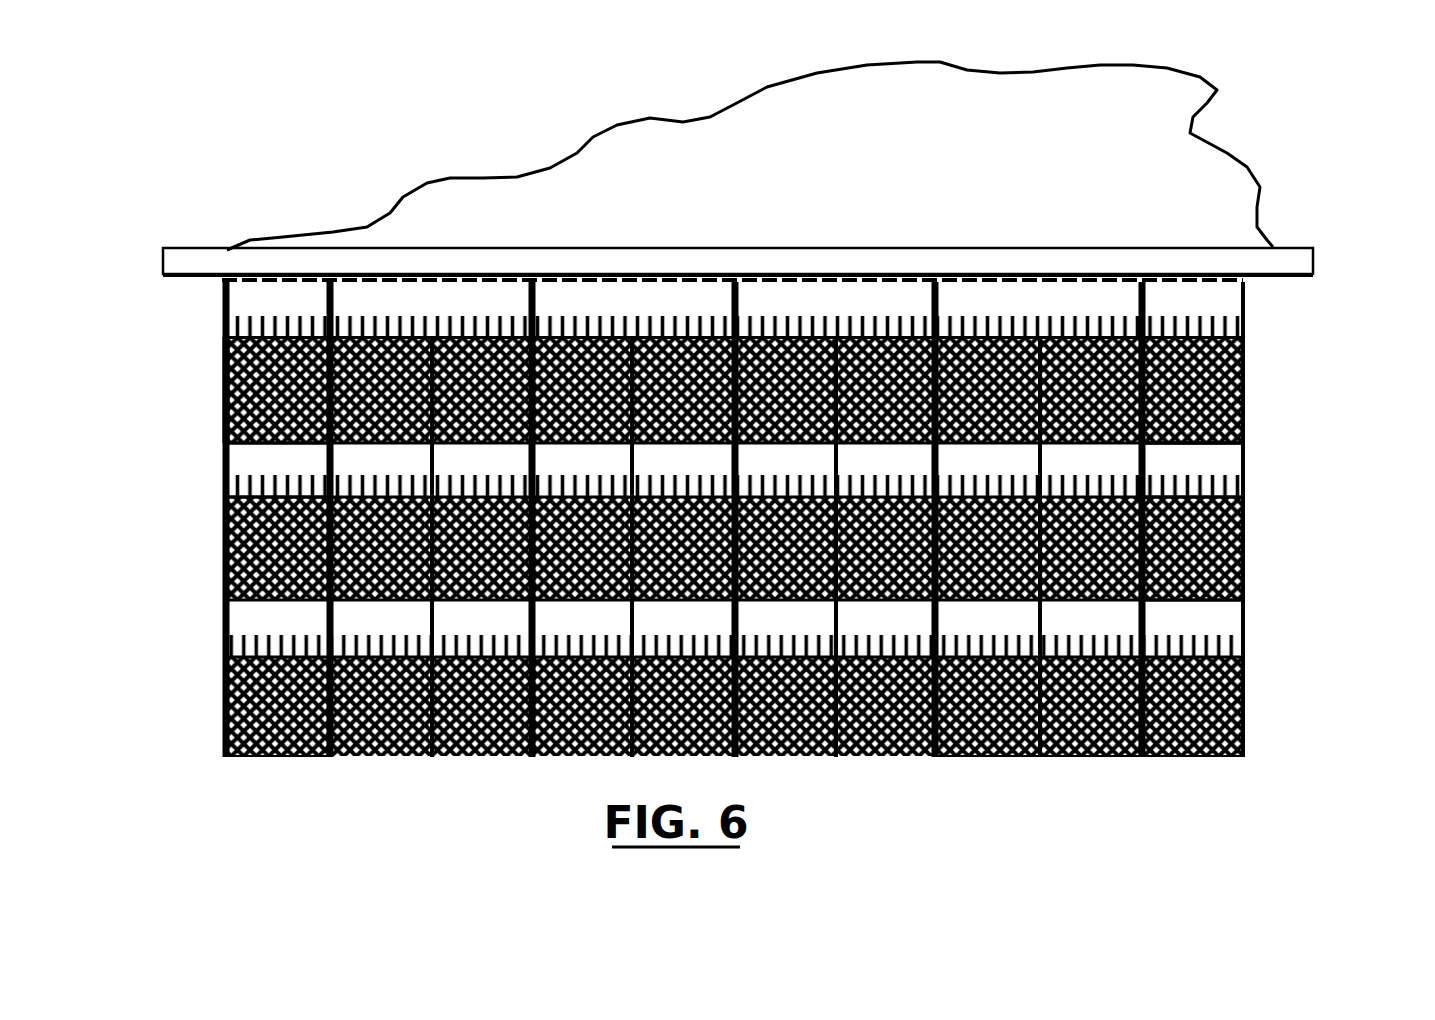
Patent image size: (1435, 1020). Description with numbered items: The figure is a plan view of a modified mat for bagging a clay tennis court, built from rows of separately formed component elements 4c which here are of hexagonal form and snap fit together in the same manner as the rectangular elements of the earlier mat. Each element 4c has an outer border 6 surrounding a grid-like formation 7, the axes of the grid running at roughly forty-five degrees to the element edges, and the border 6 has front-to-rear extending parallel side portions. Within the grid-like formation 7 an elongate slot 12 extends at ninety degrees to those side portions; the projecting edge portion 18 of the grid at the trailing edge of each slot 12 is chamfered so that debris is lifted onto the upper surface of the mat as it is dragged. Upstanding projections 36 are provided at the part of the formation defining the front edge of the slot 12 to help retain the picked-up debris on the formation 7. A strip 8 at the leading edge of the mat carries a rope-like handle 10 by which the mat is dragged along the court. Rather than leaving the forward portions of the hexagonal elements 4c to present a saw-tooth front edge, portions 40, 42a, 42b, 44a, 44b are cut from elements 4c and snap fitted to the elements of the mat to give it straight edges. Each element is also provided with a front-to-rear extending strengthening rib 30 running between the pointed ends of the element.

The component element 4c is at (1243, 553).
The outer border 6 is at (226, 688).
The grid-like formation 7 is at (1243, 507).
The strip 8 is at (840, 262).
The rope-like handle 10 is at (1207, 140).
The elongate slot 12 is at (675, 470).
The projecting edge portion 18 is at (805, 328).
The strengthening rib 30 is at (222, 410).
The upstanding projection 36 is at (1243, 420).
The cut portion 40 is at (1063, 758).
The cut portion 42a is at (278, 760).
The cut portion 42b is at (1198, 755).
The cut portion 44a is at (222, 487).
The cut portion 44b is at (1243, 473).